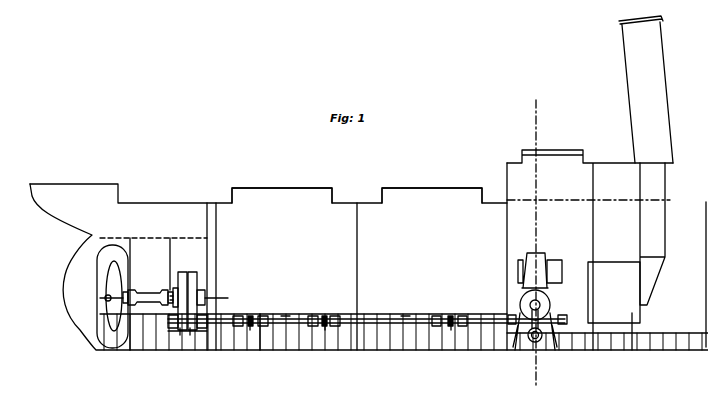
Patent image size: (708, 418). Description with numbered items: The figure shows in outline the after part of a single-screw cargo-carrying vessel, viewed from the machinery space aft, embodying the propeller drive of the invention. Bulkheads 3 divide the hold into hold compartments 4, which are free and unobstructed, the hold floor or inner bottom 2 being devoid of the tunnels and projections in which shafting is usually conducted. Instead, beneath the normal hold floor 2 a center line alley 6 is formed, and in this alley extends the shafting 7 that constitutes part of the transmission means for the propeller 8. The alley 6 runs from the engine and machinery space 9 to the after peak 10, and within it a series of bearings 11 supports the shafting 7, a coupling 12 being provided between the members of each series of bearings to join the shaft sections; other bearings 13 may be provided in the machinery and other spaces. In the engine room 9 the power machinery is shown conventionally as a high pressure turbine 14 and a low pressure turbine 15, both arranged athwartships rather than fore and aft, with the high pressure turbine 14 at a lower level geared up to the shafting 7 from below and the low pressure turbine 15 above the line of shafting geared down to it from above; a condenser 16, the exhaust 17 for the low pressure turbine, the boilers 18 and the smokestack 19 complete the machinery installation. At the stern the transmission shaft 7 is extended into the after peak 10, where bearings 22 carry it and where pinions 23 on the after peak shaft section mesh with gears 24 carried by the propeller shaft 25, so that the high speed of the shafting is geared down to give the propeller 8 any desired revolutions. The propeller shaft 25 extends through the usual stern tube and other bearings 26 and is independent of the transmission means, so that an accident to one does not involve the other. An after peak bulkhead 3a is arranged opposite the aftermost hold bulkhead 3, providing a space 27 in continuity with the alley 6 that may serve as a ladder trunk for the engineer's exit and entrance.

The normal hold or inner bottom 2 is at (373, 318).
The bulkheads 3 is at (218, 264).
The after peak bulkhead 3a is at (217, 252).
The hold compartments 4 is at (357, 215).
The alley 6 is at (264, 340).
The shafting 7 is at (286, 317).
The propeller 8 is at (112, 318).
The engine and machinery space 9 is at (590, 250).
The after peak 10 is at (180, 247).
The bearings 11 is at (241, 316).
The coupling 12 is at (250, 331).
The bearings 13 is at (511, 330).
The high pressure turbine 14 is at (530, 345).
The low pressure turbine 15 is at (543, 302).
The condenser 16 is at (553, 268).
The exhaust for the low pressure turbine 17 is at (530, 253).
The boilers 18 is at (608, 272).
The smokestack 19 is at (652, 91).
The bearings 22 is at (172, 336).
The pinions 23 is at (190, 336).
The gears 24 is at (190, 272).
The propeller shaft 25 is at (126, 292).
The stern tube and other bearings 26 is at (147, 295).
The space 27 is at (210, 227).